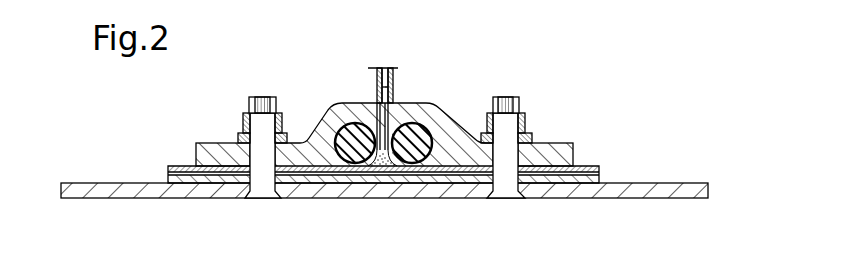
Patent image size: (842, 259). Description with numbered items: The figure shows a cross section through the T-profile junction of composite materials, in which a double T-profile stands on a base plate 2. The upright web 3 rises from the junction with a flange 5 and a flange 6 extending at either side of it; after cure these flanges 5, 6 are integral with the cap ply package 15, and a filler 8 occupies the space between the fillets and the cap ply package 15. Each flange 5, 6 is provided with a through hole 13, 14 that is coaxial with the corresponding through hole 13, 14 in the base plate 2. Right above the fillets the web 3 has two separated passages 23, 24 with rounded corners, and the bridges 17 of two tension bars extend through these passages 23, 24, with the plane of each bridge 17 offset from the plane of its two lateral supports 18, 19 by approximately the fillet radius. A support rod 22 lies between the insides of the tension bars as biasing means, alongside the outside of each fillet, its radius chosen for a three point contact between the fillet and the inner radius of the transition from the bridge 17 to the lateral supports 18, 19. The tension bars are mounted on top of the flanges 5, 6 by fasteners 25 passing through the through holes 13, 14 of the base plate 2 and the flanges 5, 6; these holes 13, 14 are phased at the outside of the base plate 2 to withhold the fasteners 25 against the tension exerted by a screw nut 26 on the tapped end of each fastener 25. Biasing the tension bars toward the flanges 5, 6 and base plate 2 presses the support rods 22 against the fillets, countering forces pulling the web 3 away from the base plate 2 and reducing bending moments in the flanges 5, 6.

The base plate 2 is at (700, 188).
The web 3 is at (380, 68).
The flange 5 is at (587, 163).
The flange 6 is at (168, 173).
The filler 8 is at (384, 172).
The through hole 13 is at (514, 153).
The through hole 14 is at (272, 150).
The cap ply package 15 is at (598, 177).
The bridge 17 is at (403, 110).
The lateral support 18 is at (552, 140).
The lateral support 19 is at (197, 155).
The support rod 22 is at (423, 140).
The passage 23 is at (377, 95).
The passage 24 is at (358, 79).
The fastener 25 is at (263, 123).
The screw nut 26 is at (240, 139).